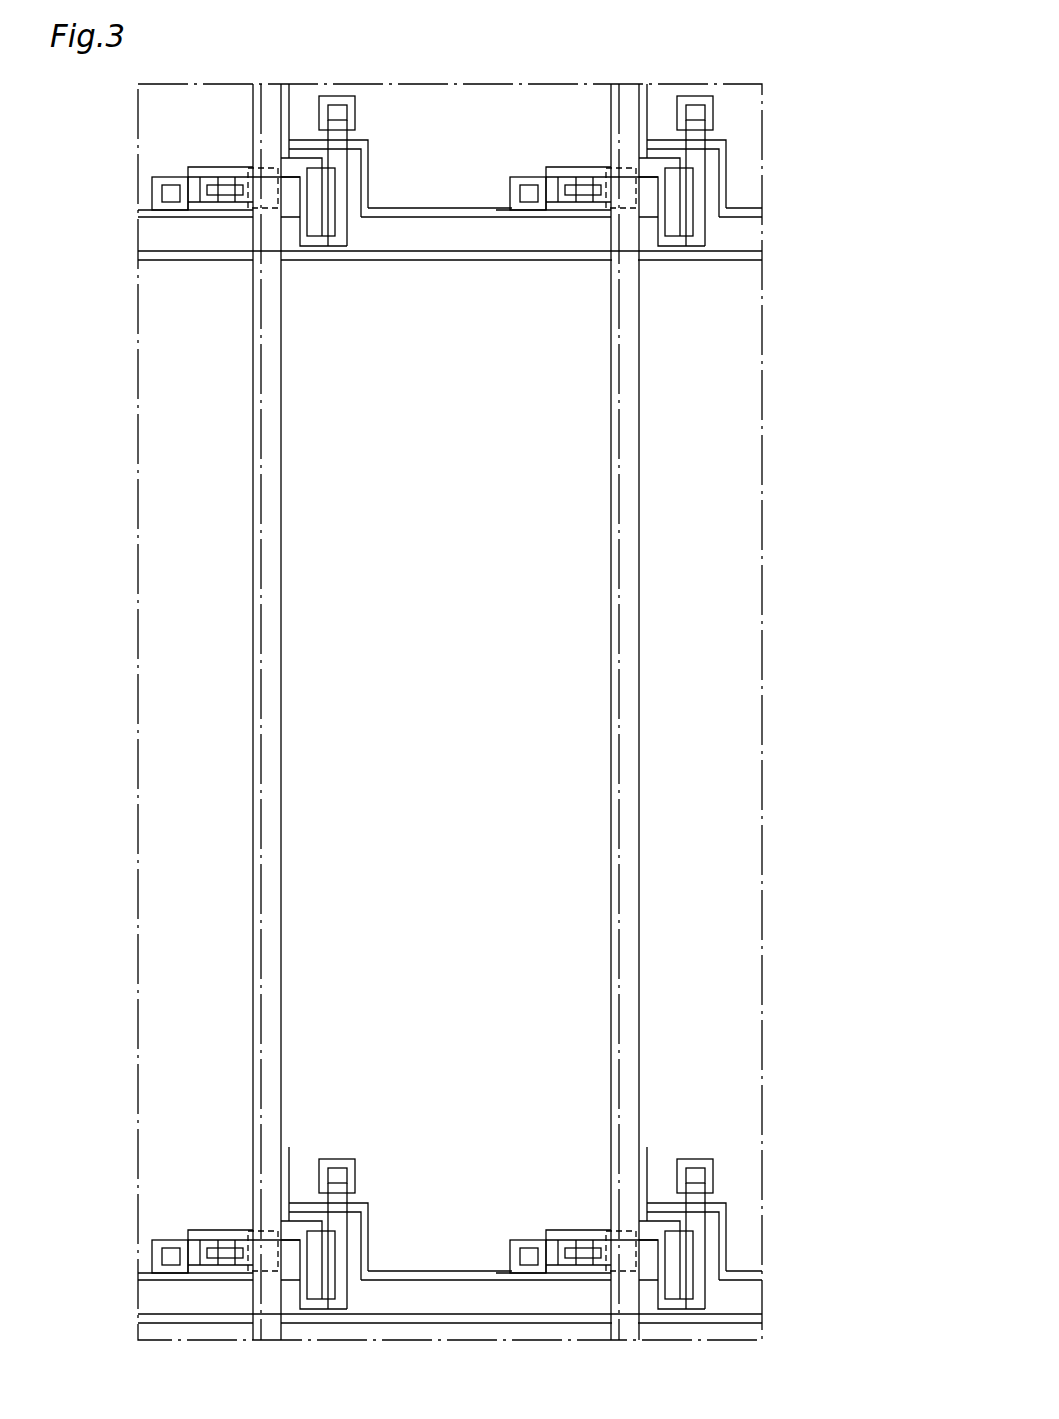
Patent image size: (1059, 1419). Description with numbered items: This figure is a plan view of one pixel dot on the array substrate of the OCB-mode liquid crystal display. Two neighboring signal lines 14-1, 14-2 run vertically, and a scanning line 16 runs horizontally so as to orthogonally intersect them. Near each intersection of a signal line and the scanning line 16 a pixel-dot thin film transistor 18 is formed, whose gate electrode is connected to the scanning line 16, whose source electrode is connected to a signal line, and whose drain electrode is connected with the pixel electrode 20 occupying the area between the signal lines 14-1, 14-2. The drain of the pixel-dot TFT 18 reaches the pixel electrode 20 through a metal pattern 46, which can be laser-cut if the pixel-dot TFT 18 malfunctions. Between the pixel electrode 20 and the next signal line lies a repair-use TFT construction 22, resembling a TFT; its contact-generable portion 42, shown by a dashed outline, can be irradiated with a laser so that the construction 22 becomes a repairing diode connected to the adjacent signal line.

The signal line 14-1 is at (265, 84).
The signal line 14-2 is at (624, 84).
The scanning line 16 is at (145, 249).
The pixel-dot thin film transistor 18 is at (380, 1262).
The pixel electrode 20 is at (168, 855).
The repair-use TFT construction 22 is at (215, 1225).
The contact-generable portion 42 is at (252, 168).
The metal pattern 46 is at (343, 147).